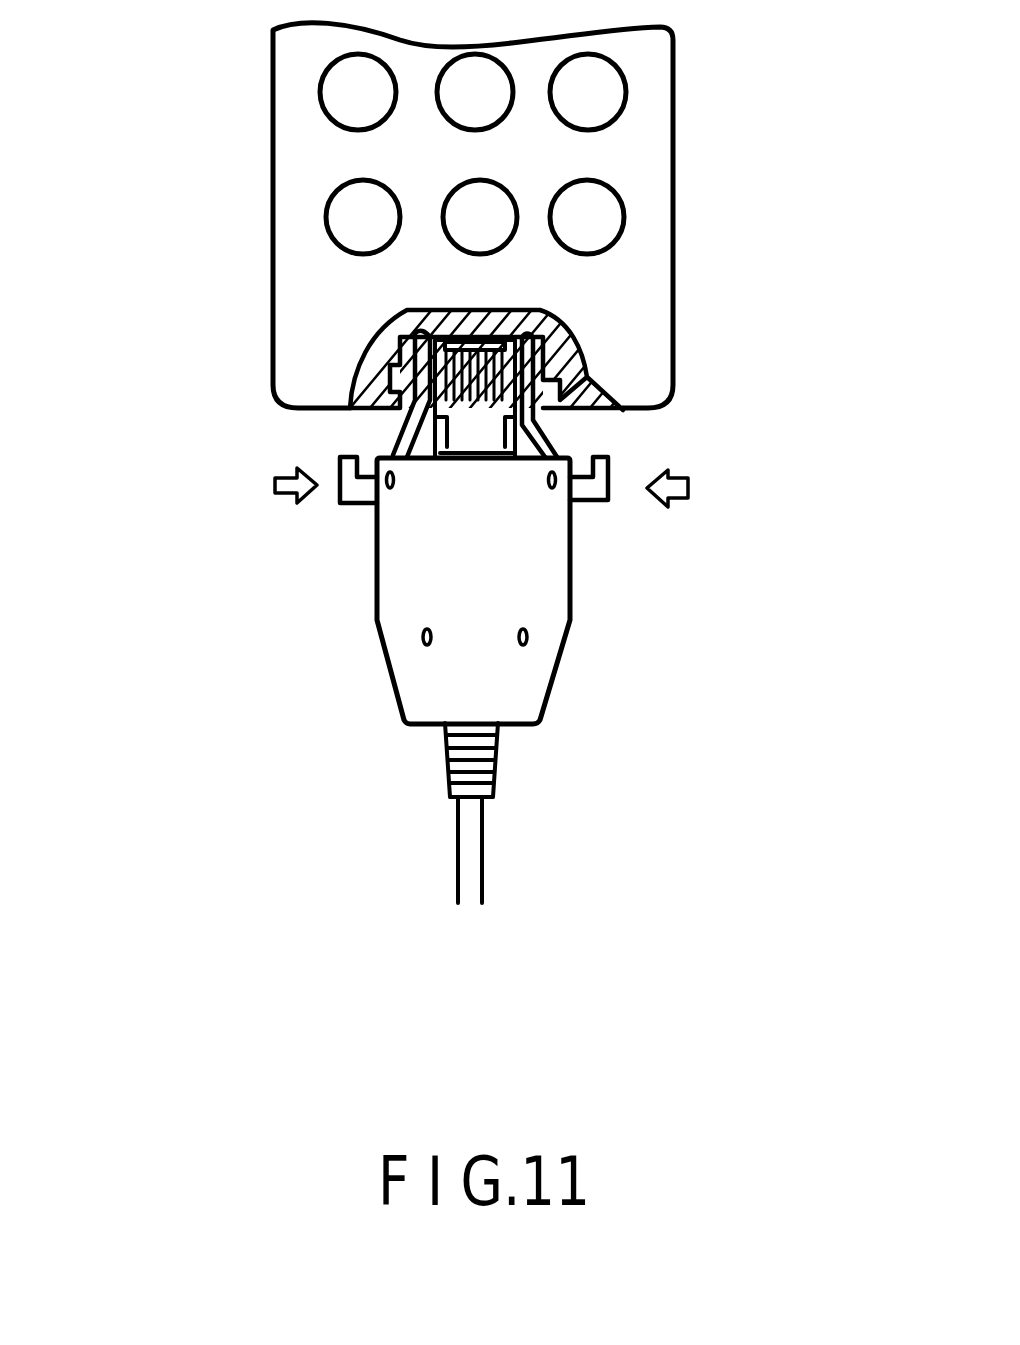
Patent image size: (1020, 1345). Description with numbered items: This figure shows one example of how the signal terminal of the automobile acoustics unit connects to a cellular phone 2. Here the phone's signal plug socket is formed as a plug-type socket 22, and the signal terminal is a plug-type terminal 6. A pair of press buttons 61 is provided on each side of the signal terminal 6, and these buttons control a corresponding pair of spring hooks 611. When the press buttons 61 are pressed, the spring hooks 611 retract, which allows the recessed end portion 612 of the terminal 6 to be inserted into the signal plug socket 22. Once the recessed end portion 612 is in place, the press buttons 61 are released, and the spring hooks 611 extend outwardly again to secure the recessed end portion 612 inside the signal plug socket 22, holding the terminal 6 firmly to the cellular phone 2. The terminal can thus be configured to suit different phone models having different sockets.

The cellular phone 2 is at (703, 207).
The plug-type socket 22 is at (627, 410).
The plug-type terminal 6 is at (573, 702).
The press buttons 61 is at (612, 517).
The spring hooks 611 is at (387, 427).
The recessed end portion 612 is at (477, 413).